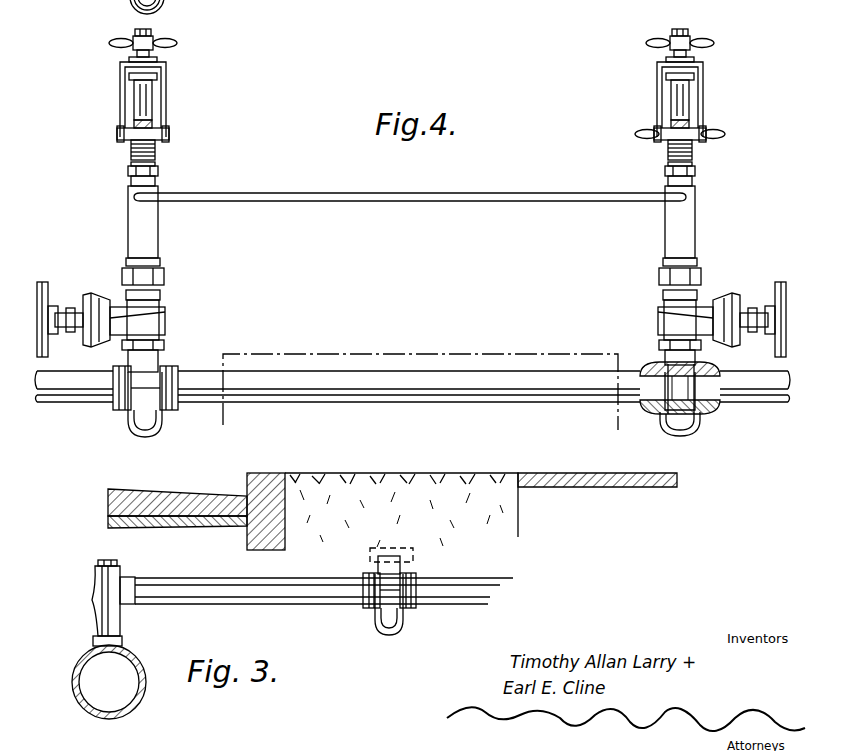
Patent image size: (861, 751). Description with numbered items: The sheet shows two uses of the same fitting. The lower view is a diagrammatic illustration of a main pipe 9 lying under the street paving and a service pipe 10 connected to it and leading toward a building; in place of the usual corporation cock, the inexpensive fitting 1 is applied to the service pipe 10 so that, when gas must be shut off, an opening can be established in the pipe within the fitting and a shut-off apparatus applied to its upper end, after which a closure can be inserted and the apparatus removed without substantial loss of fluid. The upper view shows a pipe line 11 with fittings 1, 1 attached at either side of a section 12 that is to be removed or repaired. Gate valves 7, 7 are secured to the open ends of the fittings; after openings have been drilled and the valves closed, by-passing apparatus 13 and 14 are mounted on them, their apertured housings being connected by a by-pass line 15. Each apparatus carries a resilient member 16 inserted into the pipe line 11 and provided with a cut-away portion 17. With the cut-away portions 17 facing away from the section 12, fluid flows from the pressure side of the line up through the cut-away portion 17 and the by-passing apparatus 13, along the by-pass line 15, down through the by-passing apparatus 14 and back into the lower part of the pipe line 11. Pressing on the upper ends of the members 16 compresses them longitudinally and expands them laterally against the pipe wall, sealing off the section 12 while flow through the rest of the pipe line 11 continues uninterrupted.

In FIG. 4, the fitting 1 is at (130, 1).
In FIG. 3, the fitting 1 is at (392, 626).
In FIG. 4, the gate valve 7 is at (152, 315).
In FIG. 3, the main pipe 9 is at (120, 680).
In FIG. 3, the service pipe 10 is at (228, 571).
In FIG. 4, the pipe line 11 is at (776, 402).
In FIG. 4, the section 12 is at (440, 356).
In FIG. 4, the by-passing apparatus 13 is at (686, 232).
In FIG. 4, the by-passing apparatus 14 is at (143, 233).
In FIG. 4, the by-pass line 15 is at (416, 204).
In FIG. 4, the resilient member 16 is at (688, 424).
In FIG. 4, the cut-away portion 17 is at (708, 373).